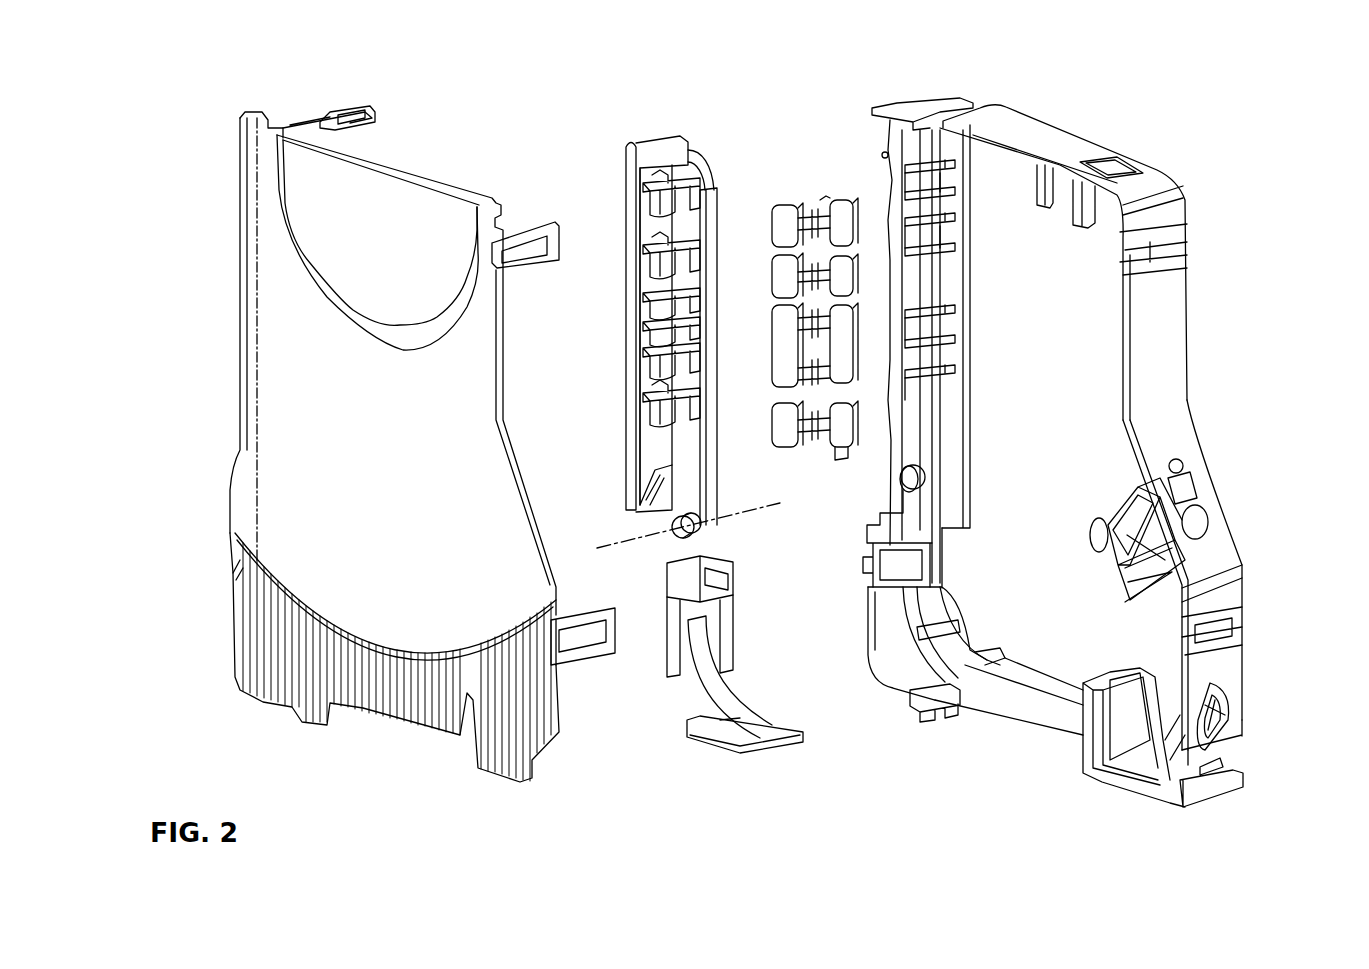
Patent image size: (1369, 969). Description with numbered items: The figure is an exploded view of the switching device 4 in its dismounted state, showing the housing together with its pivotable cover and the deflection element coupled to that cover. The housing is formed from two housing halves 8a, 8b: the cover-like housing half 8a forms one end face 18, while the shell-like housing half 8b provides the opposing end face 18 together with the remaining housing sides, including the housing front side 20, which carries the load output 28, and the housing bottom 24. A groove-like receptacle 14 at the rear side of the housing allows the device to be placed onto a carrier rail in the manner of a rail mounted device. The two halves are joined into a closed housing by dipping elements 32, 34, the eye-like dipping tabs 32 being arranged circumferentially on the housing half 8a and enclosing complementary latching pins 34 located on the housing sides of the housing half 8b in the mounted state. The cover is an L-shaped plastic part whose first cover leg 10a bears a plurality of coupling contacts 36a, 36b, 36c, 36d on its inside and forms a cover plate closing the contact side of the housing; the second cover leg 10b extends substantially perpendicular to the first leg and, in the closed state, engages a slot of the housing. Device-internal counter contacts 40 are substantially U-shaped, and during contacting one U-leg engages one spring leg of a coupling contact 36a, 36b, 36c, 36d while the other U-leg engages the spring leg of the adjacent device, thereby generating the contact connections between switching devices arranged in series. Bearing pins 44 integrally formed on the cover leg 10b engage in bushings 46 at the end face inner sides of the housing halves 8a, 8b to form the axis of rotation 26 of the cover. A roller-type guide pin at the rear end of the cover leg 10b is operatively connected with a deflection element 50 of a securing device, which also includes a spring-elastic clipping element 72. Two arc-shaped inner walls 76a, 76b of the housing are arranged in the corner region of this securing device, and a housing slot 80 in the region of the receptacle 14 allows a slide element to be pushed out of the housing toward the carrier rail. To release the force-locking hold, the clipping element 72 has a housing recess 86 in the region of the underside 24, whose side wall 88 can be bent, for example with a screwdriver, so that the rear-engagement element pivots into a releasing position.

The switching device 4 is at (1085, 475).
The cover-like housing half 8a is at (334, 447).
The shell-like housing half 8b is at (1085, 475).
The cover leg 10a is at (648, 140).
The second cover leg 10b is at (708, 230).
The receptacle 14 is at (1045, 738).
The end face 18 is at (303, 424).
The housing front side 20 is at (1152, 176).
The housing bottom 24 is at (1232, 676).
The axis of rotation 26 is at (763, 510).
The load output 28 is at (1195, 521).
The dipping tabs 32 is at (362, 113).
The latching pins 34 is at (1170, 247).
The coupling contact 36a is at (640, 192).
The coupling contact 36b is at (648, 254).
The coupling contact 36c is at (650, 352).
The coupling contact 36d is at (650, 402).
The counter contacts 40 is at (806, 195).
The bearing pins 44 is at (672, 531).
The bushings 46 is at (908, 481).
The deflection element 50 is at (740, 688).
The clipping element 72 is at (1144, 760).
The arc-shaped inner wall 76a is at (927, 660).
The arc-shaped inner wall 76b is at (927, 607).
The housing slot 80 is at (950, 697).
The housing recess 86 is at (1230, 750).
The side wall 88 is at (1113, 777).